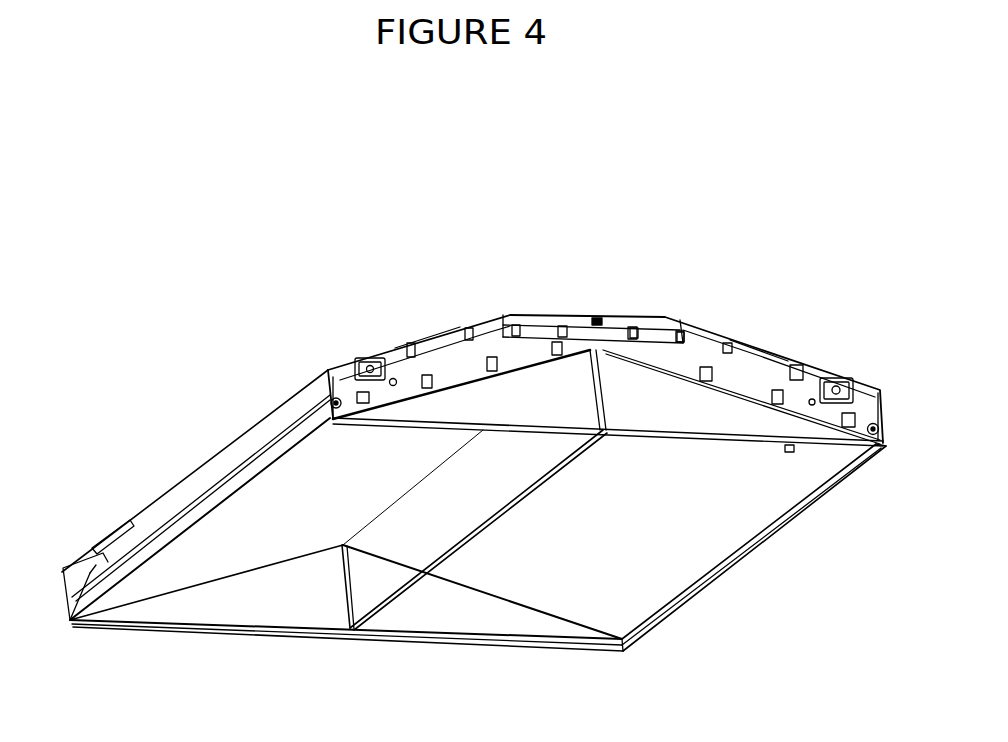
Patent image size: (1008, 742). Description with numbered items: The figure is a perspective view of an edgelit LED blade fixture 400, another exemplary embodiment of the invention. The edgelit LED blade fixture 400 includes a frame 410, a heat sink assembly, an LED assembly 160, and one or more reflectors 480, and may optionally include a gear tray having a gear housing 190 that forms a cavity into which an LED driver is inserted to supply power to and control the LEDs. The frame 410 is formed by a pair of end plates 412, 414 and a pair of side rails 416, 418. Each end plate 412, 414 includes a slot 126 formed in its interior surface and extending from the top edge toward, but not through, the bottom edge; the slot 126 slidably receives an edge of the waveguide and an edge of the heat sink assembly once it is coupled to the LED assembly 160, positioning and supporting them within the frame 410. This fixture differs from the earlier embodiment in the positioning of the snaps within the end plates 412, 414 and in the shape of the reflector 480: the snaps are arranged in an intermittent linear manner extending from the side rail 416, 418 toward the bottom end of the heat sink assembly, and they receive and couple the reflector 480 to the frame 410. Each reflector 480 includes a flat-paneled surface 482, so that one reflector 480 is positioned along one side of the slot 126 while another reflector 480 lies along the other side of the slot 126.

The edgelit LED blade fixture 400 is at (657, 208).
The frame 410 is at (780, 352).
The end plate 412 is at (183, 615).
The end plate 414 is at (672, 412).
The side rail 416 is at (73, 592).
The side rail 418 is at (805, 503).
The gear housing 190 is at (290, 392).
The LED assembly 160 is at (348, 572).
The slot 126 is at (343, 612).
The reflector 480 is at (265, 548).
The flat-paneled surface 482 is at (218, 580).